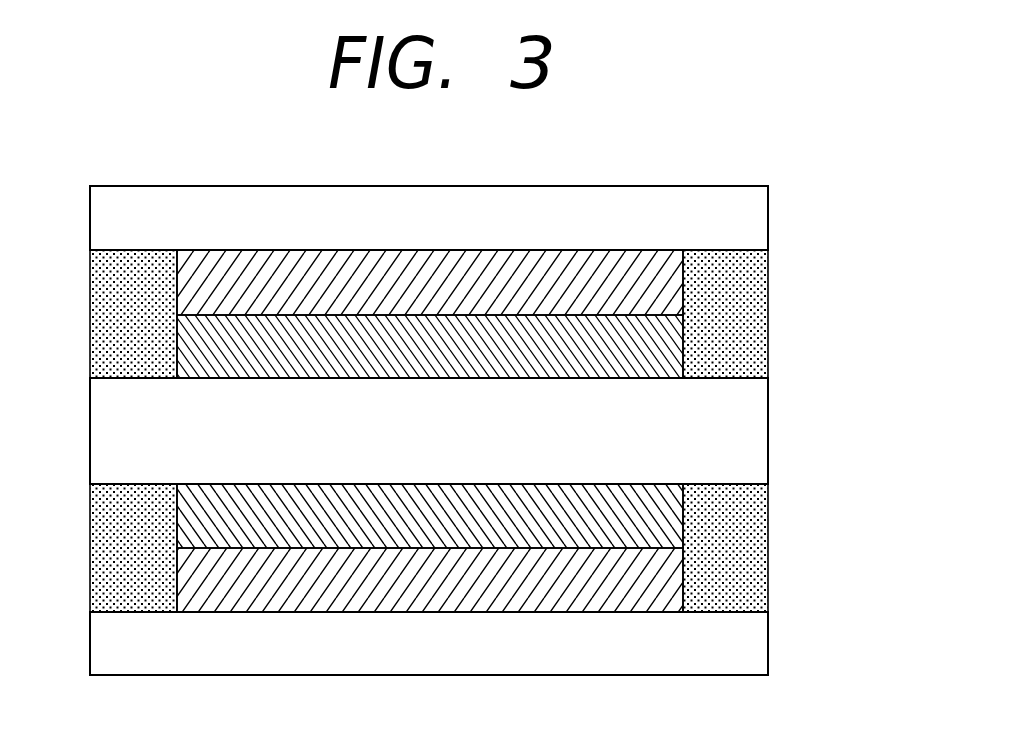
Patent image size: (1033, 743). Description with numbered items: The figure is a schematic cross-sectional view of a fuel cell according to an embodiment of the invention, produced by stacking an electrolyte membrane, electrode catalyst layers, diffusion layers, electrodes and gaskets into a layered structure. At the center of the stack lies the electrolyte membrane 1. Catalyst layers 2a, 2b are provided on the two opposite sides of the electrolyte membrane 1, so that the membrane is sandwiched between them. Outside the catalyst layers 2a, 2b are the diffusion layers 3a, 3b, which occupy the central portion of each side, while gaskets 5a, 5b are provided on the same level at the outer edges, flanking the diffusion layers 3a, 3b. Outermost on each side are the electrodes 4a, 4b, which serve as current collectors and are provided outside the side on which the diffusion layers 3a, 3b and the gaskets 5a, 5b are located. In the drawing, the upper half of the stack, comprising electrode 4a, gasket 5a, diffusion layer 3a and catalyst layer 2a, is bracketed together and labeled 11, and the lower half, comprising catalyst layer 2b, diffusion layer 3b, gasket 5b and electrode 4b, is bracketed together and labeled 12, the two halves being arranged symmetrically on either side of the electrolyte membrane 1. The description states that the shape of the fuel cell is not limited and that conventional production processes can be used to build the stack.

The electrolyte membrane 1 is at (748, 438).
The catalyst layer 2a is at (683, 352).
The diffusion layer 3a is at (680, 288).
The electrode 4a is at (752, 205).
The gasket 5a is at (738, 267).
The catalyst layer 2b is at (667, 520).
The diffusion layer 3b is at (653, 575).
The electrode 4b is at (743, 645).
The gasket 5b is at (737, 597).
The upper laminate 11 is at (68, 187).
The lower laminate 12 is at (68, 483).